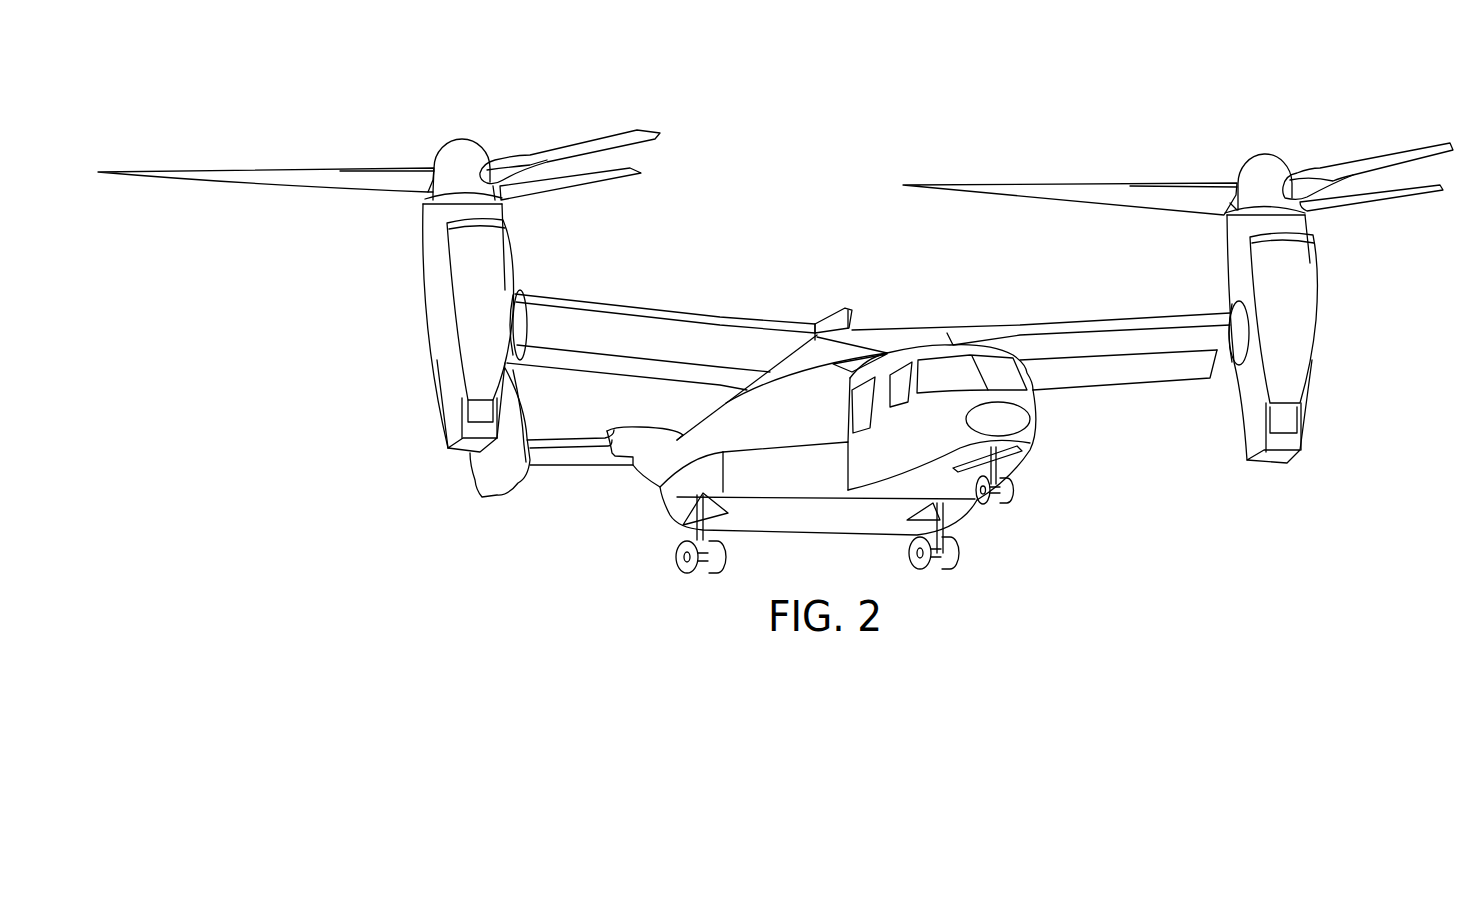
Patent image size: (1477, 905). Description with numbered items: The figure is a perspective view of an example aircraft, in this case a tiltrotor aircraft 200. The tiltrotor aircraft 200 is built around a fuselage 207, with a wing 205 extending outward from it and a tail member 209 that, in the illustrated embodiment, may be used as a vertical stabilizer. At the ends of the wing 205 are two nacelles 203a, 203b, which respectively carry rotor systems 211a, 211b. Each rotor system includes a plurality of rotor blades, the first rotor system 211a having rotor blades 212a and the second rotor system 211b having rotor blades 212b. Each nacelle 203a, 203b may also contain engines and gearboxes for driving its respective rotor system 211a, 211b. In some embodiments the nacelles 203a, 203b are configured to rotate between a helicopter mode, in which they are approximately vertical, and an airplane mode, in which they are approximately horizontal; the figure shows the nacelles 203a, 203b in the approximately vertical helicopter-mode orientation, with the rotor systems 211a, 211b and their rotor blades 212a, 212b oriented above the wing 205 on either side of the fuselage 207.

The tiltrotor aircraft 200 is at (883, 104).
The nacelle 203a is at (410, 388).
The nacelle 203b is at (1320, 412).
The wing 205 is at (663, 311).
The fuselage 207 is at (1040, 435).
The tail member 209 is at (643, 480).
The rotor system 211a is at (448, 124).
The rotor system 211b is at (1276, 140).
The rotor blades 212a is at (275, 172).
The rotor blades 212b is at (1080, 184).